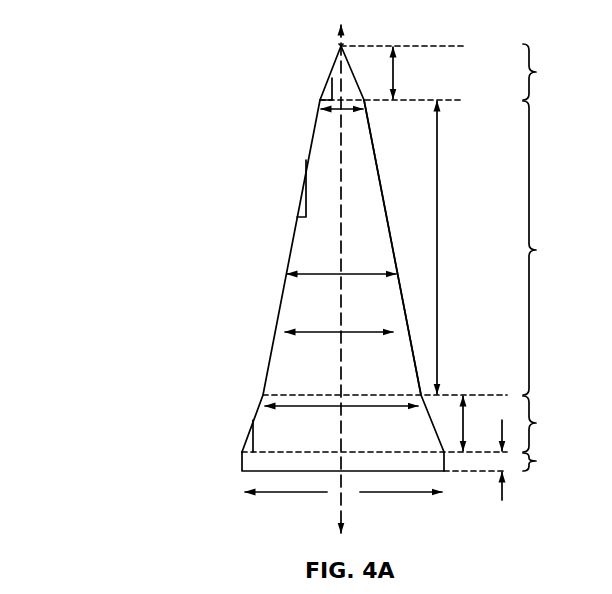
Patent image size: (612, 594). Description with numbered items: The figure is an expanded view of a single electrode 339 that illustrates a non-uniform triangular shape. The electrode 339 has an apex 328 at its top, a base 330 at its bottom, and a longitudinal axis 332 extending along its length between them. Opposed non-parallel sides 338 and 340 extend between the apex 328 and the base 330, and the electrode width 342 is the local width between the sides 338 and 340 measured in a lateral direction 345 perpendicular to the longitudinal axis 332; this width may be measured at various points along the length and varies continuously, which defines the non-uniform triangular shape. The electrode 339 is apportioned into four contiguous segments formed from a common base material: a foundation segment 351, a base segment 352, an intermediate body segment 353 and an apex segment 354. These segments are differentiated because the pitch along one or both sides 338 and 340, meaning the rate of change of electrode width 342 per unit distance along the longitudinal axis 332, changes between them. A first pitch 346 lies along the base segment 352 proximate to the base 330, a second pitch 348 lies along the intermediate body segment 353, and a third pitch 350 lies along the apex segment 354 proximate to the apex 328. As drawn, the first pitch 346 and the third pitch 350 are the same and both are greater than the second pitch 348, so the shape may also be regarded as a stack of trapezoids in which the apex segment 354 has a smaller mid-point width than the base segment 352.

The electrode 339 is at (186, 112).
The apex 328 is at (306, 67).
The longitudinal axis 332 is at (339, 43).
The third pitch 350 is at (325, 97).
The second pitch 348 is at (302, 207).
The electrode side 338 is at (380, 184).
The electrode side 340 is at (287, 263).
The electrode width 342 is at (315, 275).
The lateral direction 345 is at (300, 332).
The first pitch 346 is at (246, 449).
The base 330 is at (237, 468).
The apex segment 354 is at (451, 94).
The intermediate body segment 353 is at (509, 248).
The base segment 352 is at (414, 423).
The foundation segment 351 is at (515, 459).